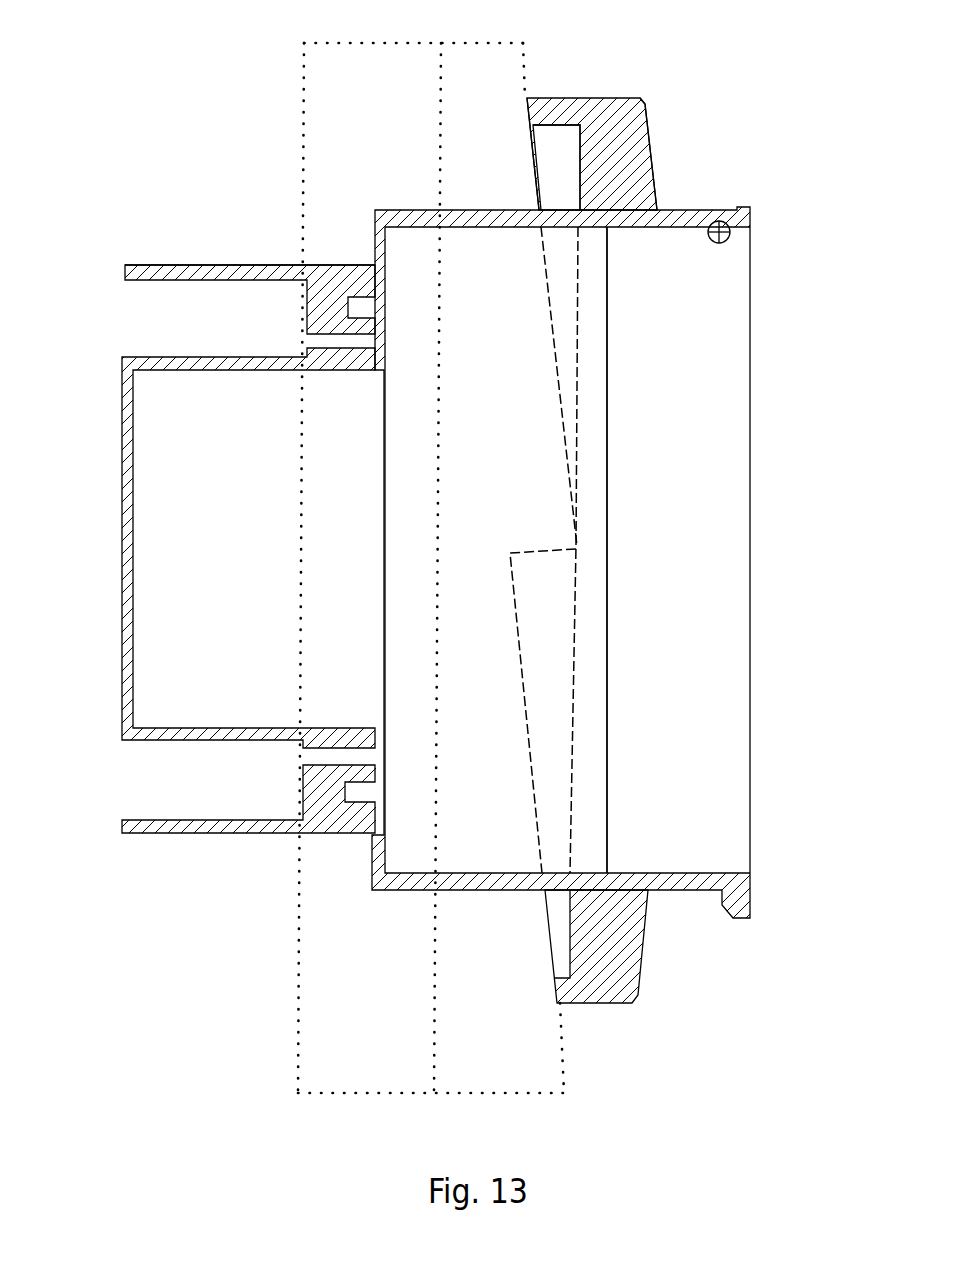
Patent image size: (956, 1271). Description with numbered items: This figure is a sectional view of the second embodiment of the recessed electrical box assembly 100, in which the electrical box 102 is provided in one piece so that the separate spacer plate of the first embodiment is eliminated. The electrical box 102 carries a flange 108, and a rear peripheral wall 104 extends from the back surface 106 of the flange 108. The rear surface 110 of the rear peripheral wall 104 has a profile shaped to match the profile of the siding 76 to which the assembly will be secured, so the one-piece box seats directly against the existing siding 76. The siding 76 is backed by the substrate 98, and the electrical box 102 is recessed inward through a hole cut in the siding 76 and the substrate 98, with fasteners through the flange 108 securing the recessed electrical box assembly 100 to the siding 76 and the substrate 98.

The siding 76 is at (499, 100).
The substrate 98 is at (361, 177).
The recessed electrical box assembly 100 is at (196, 173).
The electrical box 102 is at (157, 835).
The rear peripheral wall 104 is at (540, 108).
The back surface 106 is at (581, 184).
The flange 108 is at (638, 100).
The rear surface 110 is at (529, 114).